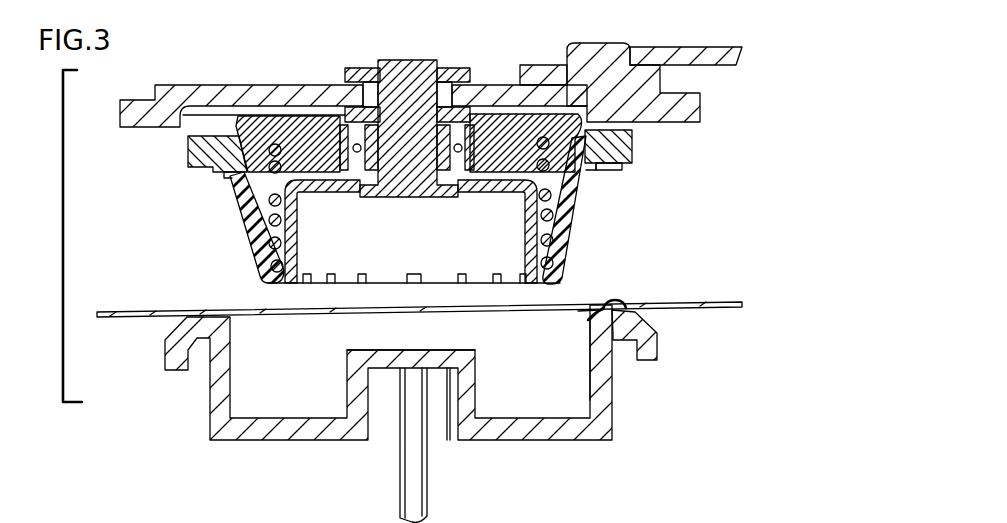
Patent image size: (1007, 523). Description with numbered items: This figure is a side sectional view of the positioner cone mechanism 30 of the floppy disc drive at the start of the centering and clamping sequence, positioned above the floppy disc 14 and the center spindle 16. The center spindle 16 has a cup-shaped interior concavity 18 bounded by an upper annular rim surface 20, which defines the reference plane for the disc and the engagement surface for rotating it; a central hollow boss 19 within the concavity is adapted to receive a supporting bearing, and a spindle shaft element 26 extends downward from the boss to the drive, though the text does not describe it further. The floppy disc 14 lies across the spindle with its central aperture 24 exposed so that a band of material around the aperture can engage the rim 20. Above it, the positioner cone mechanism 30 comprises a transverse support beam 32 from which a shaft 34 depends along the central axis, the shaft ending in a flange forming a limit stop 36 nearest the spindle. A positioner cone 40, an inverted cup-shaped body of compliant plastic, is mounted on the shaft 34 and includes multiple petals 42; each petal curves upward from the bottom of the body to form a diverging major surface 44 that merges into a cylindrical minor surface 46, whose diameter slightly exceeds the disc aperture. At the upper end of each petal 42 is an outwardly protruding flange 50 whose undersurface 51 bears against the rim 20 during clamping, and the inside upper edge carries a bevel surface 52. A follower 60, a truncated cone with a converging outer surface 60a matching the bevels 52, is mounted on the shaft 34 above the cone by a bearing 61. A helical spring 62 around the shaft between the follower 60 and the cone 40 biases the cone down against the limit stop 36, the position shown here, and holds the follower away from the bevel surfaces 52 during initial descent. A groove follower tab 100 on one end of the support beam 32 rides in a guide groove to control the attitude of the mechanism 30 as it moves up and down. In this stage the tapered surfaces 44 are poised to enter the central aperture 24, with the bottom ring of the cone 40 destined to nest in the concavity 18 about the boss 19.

The floppy disc 14 is at (683, 304).
The center spindle 16 is at (411, 372).
The cup-shaped interior concavity 18 is at (588, 367).
The boss 19 is at (462, 349).
The upper annular rim surface 20 is at (588, 320).
The central aperture 24 is at (585, 310).
The pin 26 is at (456, 445).
The positioner cone mechanism 30 is at (462, 45).
The transverse support beam 32 is at (266, 85).
The shaft 34 is at (403, 62).
The limit stop 36 is at (362, 193).
The positioner cone 40 is at (591, 201).
The petals 42 is at (573, 214).
The diverging major surface 44 is at (252, 236).
The minor surface 46 is at (224, 178).
The flange 50 is at (610, 114).
The undersurface 51 is at (612, 166).
The bevel surface 52 is at (585, 131).
The follower 60 is at (304, 128).
The outer surface 60a is at (237, 146).
The bearing 61 is at (456, 100).
The helical spring 62 is at (553, 215).
The groove follower tab 100 is at (707, 46).